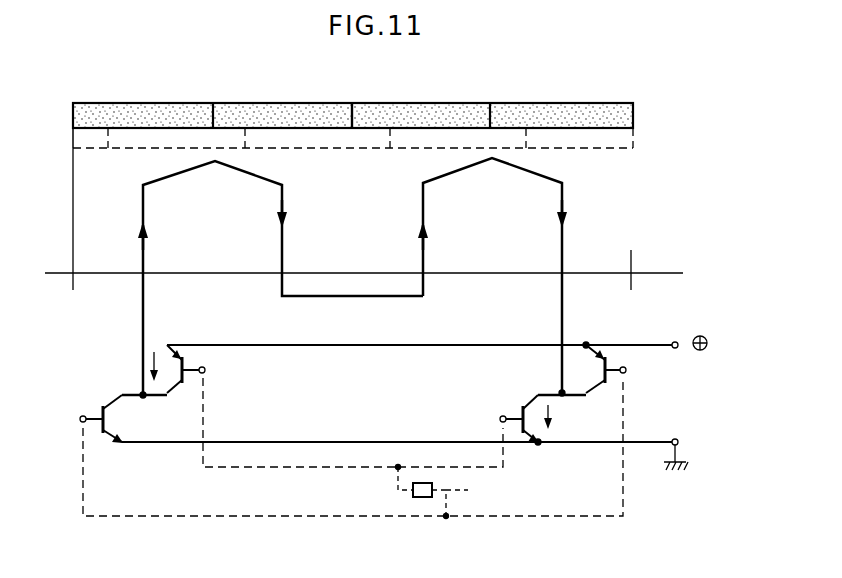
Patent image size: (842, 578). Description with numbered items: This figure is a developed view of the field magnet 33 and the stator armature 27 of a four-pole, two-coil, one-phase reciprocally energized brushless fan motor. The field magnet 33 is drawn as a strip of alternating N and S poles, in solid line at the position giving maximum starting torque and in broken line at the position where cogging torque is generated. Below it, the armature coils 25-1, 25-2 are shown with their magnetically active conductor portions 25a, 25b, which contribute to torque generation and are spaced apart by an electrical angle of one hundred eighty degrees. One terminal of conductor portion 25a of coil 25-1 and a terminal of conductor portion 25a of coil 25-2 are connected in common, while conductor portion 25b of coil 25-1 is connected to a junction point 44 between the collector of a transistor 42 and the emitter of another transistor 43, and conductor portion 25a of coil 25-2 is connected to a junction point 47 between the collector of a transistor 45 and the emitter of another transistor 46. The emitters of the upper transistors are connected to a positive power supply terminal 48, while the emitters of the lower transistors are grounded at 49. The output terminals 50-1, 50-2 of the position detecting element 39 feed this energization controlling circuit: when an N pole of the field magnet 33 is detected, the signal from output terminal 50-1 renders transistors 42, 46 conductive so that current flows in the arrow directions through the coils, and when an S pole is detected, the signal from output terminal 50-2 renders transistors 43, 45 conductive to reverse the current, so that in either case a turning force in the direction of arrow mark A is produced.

The arrow mark indicating direction of turning force A is at (652, 109).
The field magnet 33 is at (517, 113).
The stator armature 27 is at (638, 235).
The armature coil 25-1 is at (165, 178).
The armature coil 25-2 is at (440, 180).
The magnetically active conductor portion 25a is at (282, 205).
The magnetically active conductor portion 25b is at (143, 212).
The positive power supply terminal 48 is at (677, 341).
The transistor 42 is at (187, 355).
The junction point 44 is at (140, 392).
The transistor 43 is at (120, 420).
The transistor 45 is at (608, 353).
The junction point 47 is at (558, 390).
The transistor 46 is at (553, 426).
The ground 49 is at (680, 444).
The output terminal 50-1 is at (398, 490).
The output terminal 50-2 is at (510, 448).
The position detecting element 39 is at (422, 498).